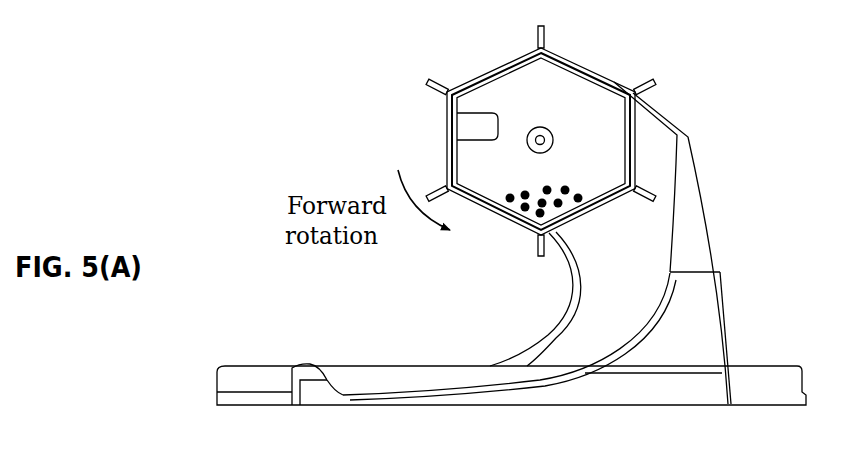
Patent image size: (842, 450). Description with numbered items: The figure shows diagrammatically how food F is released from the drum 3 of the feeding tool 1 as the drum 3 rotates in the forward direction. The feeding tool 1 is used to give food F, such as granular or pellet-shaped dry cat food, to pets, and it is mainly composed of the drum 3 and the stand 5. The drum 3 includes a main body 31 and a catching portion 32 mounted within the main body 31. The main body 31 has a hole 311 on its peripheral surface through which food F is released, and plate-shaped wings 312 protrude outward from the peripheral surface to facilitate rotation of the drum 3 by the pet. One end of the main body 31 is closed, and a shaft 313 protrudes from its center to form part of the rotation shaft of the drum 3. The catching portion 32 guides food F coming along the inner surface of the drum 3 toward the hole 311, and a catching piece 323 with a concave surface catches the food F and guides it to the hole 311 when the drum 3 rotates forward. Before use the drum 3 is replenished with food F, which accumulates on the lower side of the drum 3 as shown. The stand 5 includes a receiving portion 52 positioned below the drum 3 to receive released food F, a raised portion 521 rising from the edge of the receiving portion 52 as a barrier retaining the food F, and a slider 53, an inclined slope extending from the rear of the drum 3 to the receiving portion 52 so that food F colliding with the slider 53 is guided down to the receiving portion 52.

The feeding tool 1 is at (298, 112).
The drum 3 is at (466, 78).
The main body 31 is at (616, 80).
The catching portion 32 is at (500, 60).
The hole 311 is at (446, 133).
The wings 312 is at (546, 33).
The shaft 313 is at (551, 133).
The catching piece 323 is at (456, 121).
The food F is at (570, 186).
The stand 5 is at (719, 266).
The receiving portion 52 is at (404, 390).
The raised portion 521 is at (306, 368).
The slider 53 is at (668, 272).